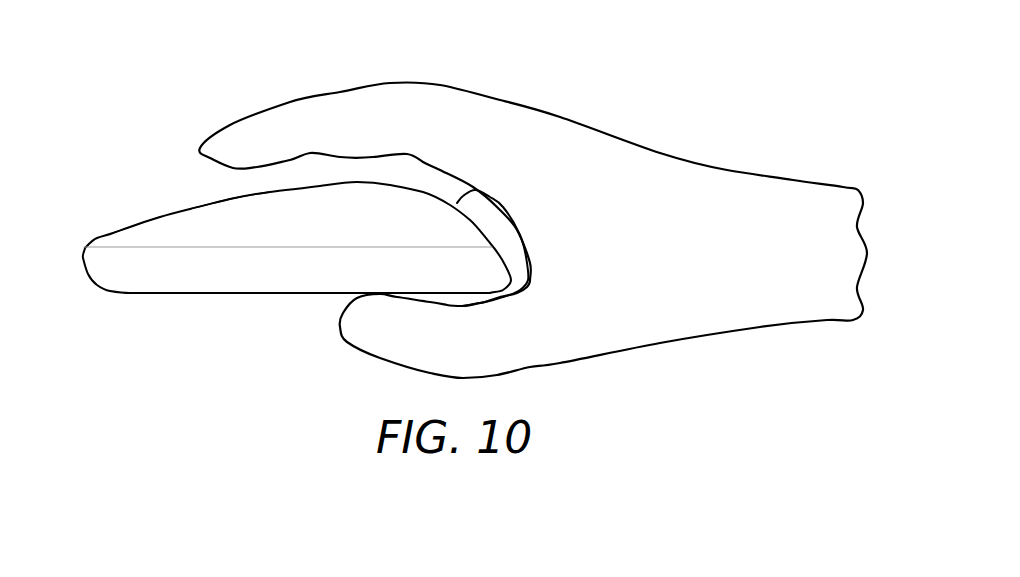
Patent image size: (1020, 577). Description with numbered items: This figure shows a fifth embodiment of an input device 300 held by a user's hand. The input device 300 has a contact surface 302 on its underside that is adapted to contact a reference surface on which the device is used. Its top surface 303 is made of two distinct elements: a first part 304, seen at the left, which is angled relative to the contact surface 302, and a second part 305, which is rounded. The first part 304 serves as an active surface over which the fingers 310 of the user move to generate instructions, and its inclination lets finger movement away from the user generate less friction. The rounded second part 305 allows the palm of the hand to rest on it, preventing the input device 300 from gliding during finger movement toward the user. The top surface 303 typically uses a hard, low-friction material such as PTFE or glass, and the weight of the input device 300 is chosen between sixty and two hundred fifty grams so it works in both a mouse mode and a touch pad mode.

The input device 300 is at (278, 260).
The contact surface 302 is at (245, 294).
The top surface 303 is at (187, 208).
The first part of the top surface 304 is at (130, 238).
The second part of the top surface 305 is at (470, 194).
The fingers 310 is at (228, 138).